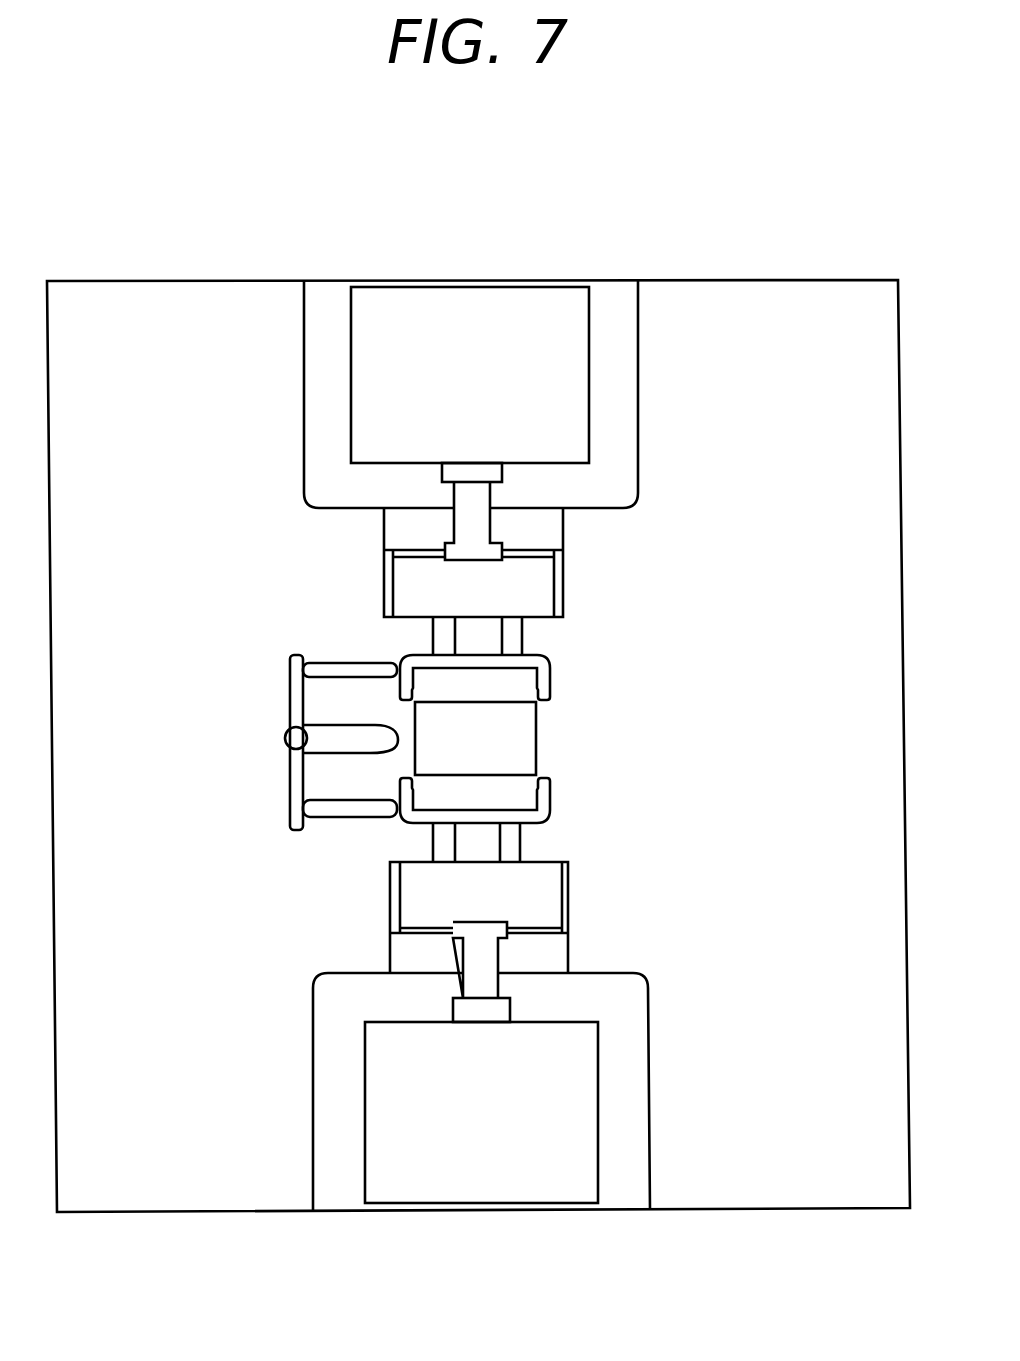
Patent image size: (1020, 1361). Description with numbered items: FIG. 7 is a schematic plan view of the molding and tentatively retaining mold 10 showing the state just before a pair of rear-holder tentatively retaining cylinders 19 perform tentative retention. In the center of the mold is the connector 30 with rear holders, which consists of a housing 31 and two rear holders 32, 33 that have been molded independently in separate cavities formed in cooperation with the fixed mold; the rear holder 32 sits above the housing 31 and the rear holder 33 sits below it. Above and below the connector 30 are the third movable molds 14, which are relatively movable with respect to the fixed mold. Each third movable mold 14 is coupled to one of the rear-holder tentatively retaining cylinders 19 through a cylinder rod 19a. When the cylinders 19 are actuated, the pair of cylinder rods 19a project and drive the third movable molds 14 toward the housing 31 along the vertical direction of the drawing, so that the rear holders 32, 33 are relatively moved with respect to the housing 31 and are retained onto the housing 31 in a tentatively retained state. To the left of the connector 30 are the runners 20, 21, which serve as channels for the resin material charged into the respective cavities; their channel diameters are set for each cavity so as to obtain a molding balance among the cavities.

The socket assembly 10 is at (492, 262).
The rear-holder tentatively retaining cylinder 19 is at (494, 388).
The cylinder rod 19a is at (477, 525).
The third movable mold 14 is at (527, 590).
The runner 21 is at (348, 665).
The runner 20 is at (344, 738).
The connector with rear holders 30 is at (533, 739).
The housing 31 is at (488, 750).
The rear holder 32 is at (550, 668).
The rear holder 33 is at (553, 800).